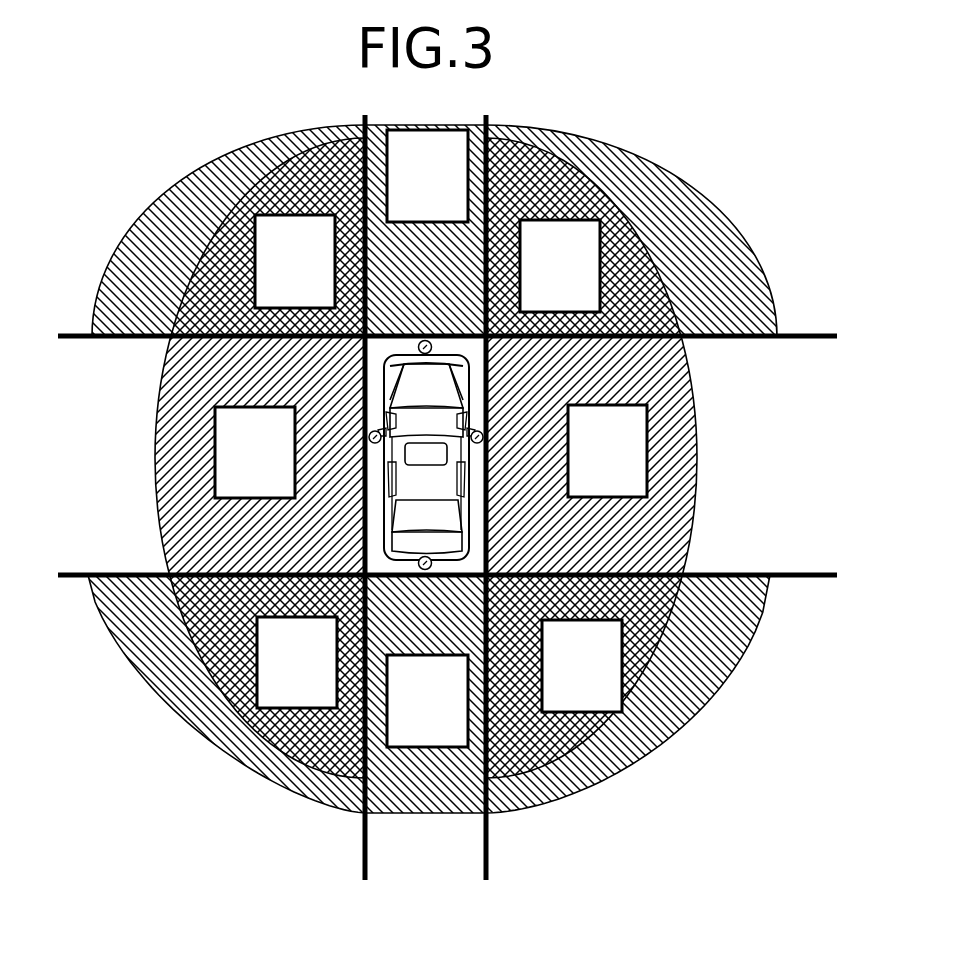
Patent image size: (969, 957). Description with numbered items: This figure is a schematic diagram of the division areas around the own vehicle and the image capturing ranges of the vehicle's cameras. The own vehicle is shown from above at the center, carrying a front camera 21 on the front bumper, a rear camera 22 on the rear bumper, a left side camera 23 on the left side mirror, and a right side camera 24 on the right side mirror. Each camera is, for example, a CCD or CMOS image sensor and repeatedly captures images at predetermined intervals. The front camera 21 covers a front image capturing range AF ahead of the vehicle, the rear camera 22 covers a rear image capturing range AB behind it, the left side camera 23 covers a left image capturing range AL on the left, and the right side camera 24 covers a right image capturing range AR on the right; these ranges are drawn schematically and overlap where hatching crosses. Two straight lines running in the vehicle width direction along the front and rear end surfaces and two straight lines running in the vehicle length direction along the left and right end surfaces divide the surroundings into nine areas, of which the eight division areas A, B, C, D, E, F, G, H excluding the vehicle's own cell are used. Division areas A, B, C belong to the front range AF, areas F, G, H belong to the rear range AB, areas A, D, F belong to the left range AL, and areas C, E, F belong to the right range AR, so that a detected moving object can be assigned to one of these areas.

The front camera 21 is at (425, 340).
The rear camera 22 is at (424, 570).
The left side camera 23 is at (369, 437).
The right side camera 24 is at (483, 437).
The front image capturing range AF is at (640, 178).
The rear image capturing range AB is at (687, 698).
The left image capturing range AL is at (168, 420).
The right image capturing range AR is at (684, 398).
The division area A is at (295, 261).
The division area B is at (427, 176).
The division area C is at (560, 266).
The division area D is at (255, 452).
The division area E is at (607, 451).
The division area F is at (297, 662).
The division area G is at (427, 701).
The division area H is at (582, 666).